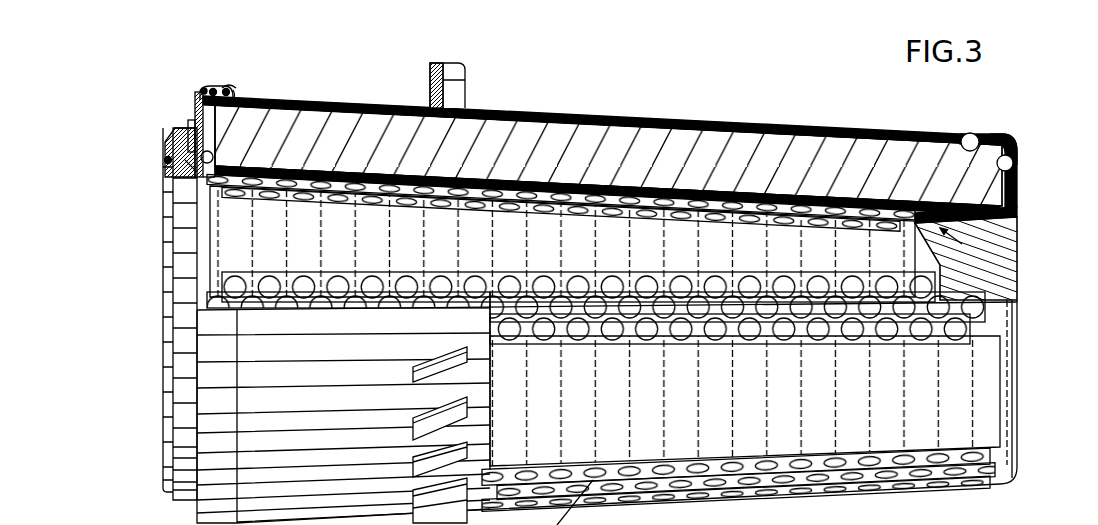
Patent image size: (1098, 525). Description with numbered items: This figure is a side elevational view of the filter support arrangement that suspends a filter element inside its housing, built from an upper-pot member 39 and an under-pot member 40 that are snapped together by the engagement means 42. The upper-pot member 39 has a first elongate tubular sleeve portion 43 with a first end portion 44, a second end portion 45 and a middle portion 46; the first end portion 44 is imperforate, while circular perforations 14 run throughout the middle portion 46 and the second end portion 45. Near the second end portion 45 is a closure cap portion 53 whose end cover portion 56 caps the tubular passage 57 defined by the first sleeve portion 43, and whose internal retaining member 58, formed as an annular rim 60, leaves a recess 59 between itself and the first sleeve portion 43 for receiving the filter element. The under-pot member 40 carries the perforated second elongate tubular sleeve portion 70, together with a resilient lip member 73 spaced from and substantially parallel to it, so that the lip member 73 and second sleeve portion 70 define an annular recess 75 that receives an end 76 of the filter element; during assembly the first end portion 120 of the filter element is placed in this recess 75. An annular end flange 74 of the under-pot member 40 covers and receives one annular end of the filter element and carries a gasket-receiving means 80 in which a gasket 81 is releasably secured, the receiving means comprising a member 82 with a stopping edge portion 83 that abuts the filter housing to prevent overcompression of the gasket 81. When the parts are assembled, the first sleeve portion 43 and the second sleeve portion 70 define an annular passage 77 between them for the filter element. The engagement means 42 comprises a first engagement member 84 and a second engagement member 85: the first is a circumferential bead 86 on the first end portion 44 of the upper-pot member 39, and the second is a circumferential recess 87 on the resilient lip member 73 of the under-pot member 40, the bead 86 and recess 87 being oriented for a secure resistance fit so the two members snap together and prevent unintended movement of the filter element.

The perforations 14 is at (988, 456).
The upper-pot member 39 is at (1010, 136).
The under-pot member 40 is at (200, 203).
The engagement means 42 is at (231, 77).
The first elongate tubular sleeve portion 43 is at (735, 122).
The first end portion 44 is at (363, 102).
The second end portion 45 is at (868, 130).
The middle portion 46 is at (660, 118).
The closure cap portion 53 is at (1018, 207).
The end cover portion 56 is at (1018, 178).
The tubular passage 57 is at (965, 134).
The internal retaining member 58 is at (947, 230).
The recess 59 is at (1014, 160).
The annular rim 60 is at (1017, 250).
The second elongate tubular sleeve portion 70 is at (392, 190).
The resilient lip member 73 is at (233, 88).
The annular end flange 74 is at (197, 116).
The annular recess 75 is at (205, 183).
The end of the filter element 76 is at (197, 153).
The annular passage 77 is at (200, 106).
The gasket-receiving means 80 is at (200, 128).
The gasket 81 is at (200, 150).
The member 82 is at (195, 160).
The stopping edge portion 83 is at (197, 170).
The first engagement member 84 is at (200, 91).
The second engagement member 85 is at (213, 83).
The circumferential bead 86 is at (203, 87).
The circumferential recess 87 is at (227, 84).
The first end portion of the filter element 120 is at (770, 500).